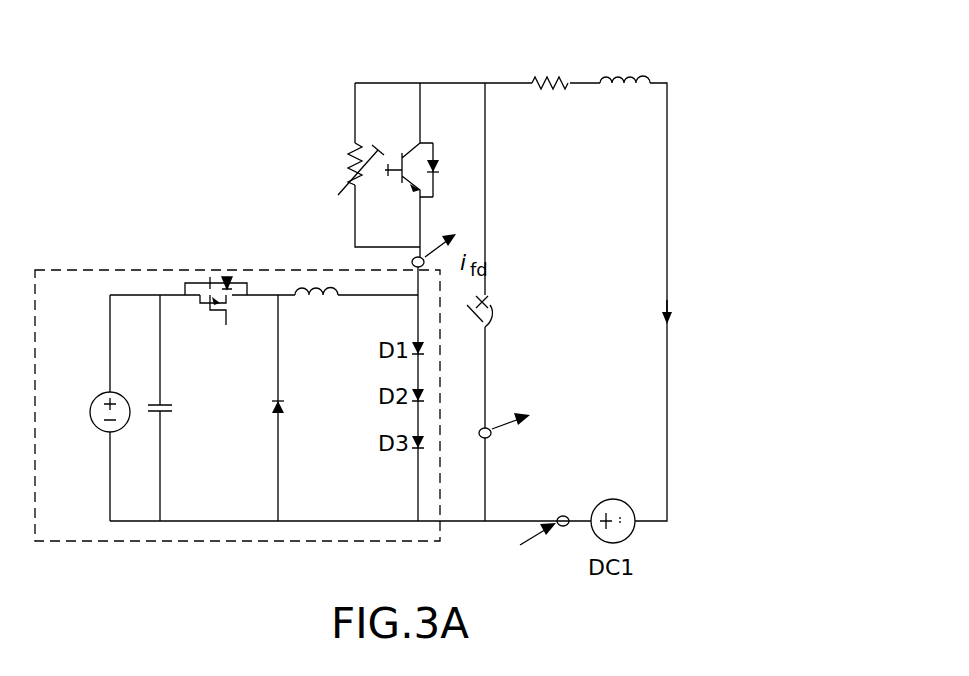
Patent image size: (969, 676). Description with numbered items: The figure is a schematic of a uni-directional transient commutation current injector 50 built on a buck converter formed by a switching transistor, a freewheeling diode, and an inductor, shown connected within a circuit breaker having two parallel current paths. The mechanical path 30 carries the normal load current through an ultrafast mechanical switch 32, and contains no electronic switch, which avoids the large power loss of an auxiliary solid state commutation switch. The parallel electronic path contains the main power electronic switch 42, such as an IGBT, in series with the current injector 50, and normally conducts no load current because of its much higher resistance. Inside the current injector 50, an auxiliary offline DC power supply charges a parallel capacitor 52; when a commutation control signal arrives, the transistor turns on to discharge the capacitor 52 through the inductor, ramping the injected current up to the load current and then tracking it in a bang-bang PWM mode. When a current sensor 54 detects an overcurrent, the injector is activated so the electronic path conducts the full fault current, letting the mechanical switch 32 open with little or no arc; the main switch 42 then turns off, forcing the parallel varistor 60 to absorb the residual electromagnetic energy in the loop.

The mechanical path 30 is at (485, 168).
The ultrafast mechanical switch 32 is at (490, 318).
The main power electronic switch 42 is at (423, 138).
The current injector 50 is at (128, 270).
The capacitor 52 is at (170, 405).
The current sensor 54 is at (495, 428).
The varistor 60 is at (345, 190).